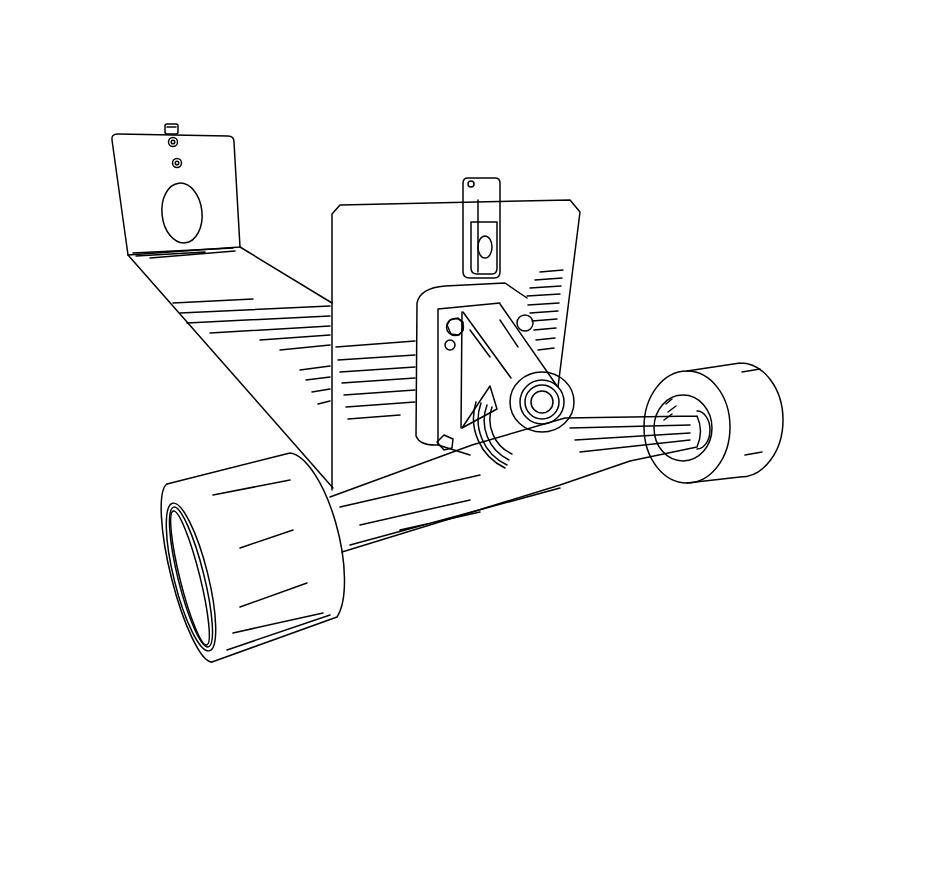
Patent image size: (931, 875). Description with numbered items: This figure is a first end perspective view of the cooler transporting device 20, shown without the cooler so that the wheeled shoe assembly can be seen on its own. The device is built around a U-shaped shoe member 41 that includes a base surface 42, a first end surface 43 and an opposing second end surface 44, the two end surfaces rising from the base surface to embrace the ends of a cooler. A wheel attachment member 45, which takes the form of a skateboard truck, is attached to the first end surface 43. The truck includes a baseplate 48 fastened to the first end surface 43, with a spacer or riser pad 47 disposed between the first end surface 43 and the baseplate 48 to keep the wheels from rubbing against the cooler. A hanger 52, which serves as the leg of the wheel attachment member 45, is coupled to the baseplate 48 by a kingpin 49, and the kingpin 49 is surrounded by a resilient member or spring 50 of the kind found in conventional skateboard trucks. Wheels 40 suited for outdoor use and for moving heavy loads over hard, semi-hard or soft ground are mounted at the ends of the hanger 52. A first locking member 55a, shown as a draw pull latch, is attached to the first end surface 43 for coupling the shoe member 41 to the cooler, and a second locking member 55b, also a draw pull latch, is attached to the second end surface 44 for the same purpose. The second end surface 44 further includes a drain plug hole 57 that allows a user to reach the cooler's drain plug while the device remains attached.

The cooler transporting device 20 is at (440, 127).
The U-shaped shoe member 41 is at (285, 158).
The base surface 42 is at (227, 338).
The first end surface 43 is at (557, 230).
The second end surface 44 is at (125, 160).
The wheel attachment member 45 is at (586, 362).
The riser pad 47 is at (445, 397).
The baseplate 48 is at (427, 406).
The kingpin 49 is at (560, 398).
The spring 50 is at (518, 445).
The hanger 52 is at (413, 517).
The wheel 40 is at (263, 627).
The first locking member 55a is at (493, 182).
The second locking member 55b is at (172, 123).
The drain plug hole 57 is at (166, 203).